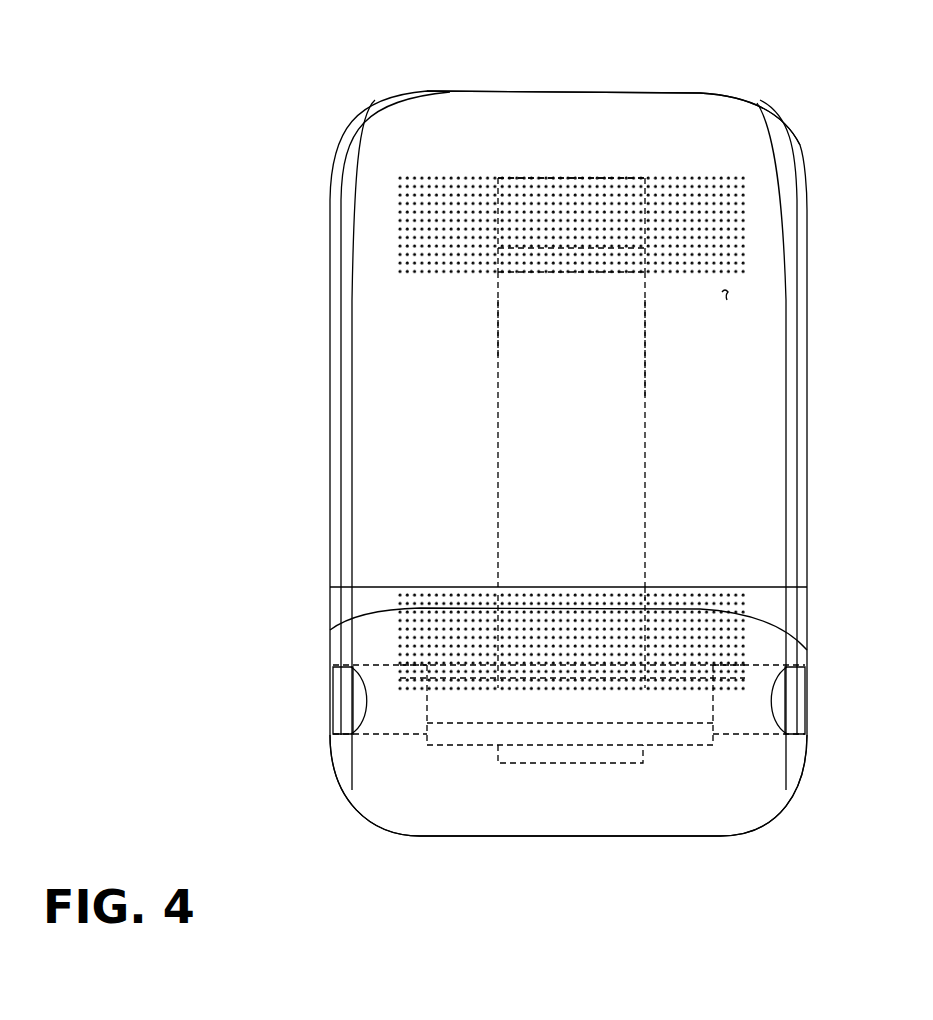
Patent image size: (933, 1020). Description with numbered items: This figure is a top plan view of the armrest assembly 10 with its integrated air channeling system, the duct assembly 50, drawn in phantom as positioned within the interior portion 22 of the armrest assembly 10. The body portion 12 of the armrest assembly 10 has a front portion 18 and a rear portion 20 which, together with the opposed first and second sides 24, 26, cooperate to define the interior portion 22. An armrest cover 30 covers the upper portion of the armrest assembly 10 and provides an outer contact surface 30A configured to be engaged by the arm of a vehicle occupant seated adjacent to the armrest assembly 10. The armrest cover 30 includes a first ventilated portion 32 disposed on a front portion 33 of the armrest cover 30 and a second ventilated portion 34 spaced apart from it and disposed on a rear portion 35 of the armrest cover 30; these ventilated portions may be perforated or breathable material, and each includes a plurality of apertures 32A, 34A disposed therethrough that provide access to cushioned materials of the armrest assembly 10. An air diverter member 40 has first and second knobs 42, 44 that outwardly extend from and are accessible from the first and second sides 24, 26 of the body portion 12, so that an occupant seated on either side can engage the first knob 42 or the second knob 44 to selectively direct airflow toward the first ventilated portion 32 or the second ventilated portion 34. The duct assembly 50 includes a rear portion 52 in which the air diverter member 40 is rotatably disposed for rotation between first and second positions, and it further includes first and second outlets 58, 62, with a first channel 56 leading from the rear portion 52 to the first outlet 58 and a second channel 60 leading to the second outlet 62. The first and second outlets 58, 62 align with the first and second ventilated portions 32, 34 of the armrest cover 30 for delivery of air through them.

The armrest assembly 10 is at (258, 280).
The body portion 12 is at (315, 435).
The front portion 18 is at (525, 91).
The rear portion 20 is at (555, 836).
The interior portion 22 is at (730, 292).
The first side 24 is at (330, 522).
The second side 26 is at (808, 405).
The armrest cover 30 is at (730, 390).
The outer contact surface 30A is at (535, 432).
The first ventilated portion 32 is at (750, 232).
The plurality of apertures 32A is at (662, 178).
The front portion 33 is at (720, 122).
The second ventilated portion 34 is at (750, 652).
The plurality of apertures 34A is at (715, 588).
The rear portion 35 is at (737, 800).
The air diverter member 40 is at (795, 738).
The first knob 42 is at (345, 700).
The second knob 44 is at (785, 700).
The duct assembly 50 is at (665, 352).
The rear portion 52 is at (660, 745).
The first channel 56 is at (527, 325).
The first outlet 58 is at (533, 175).
The second channel 60 is at (745, 648).
The second outlet 62 is at (648, 588).